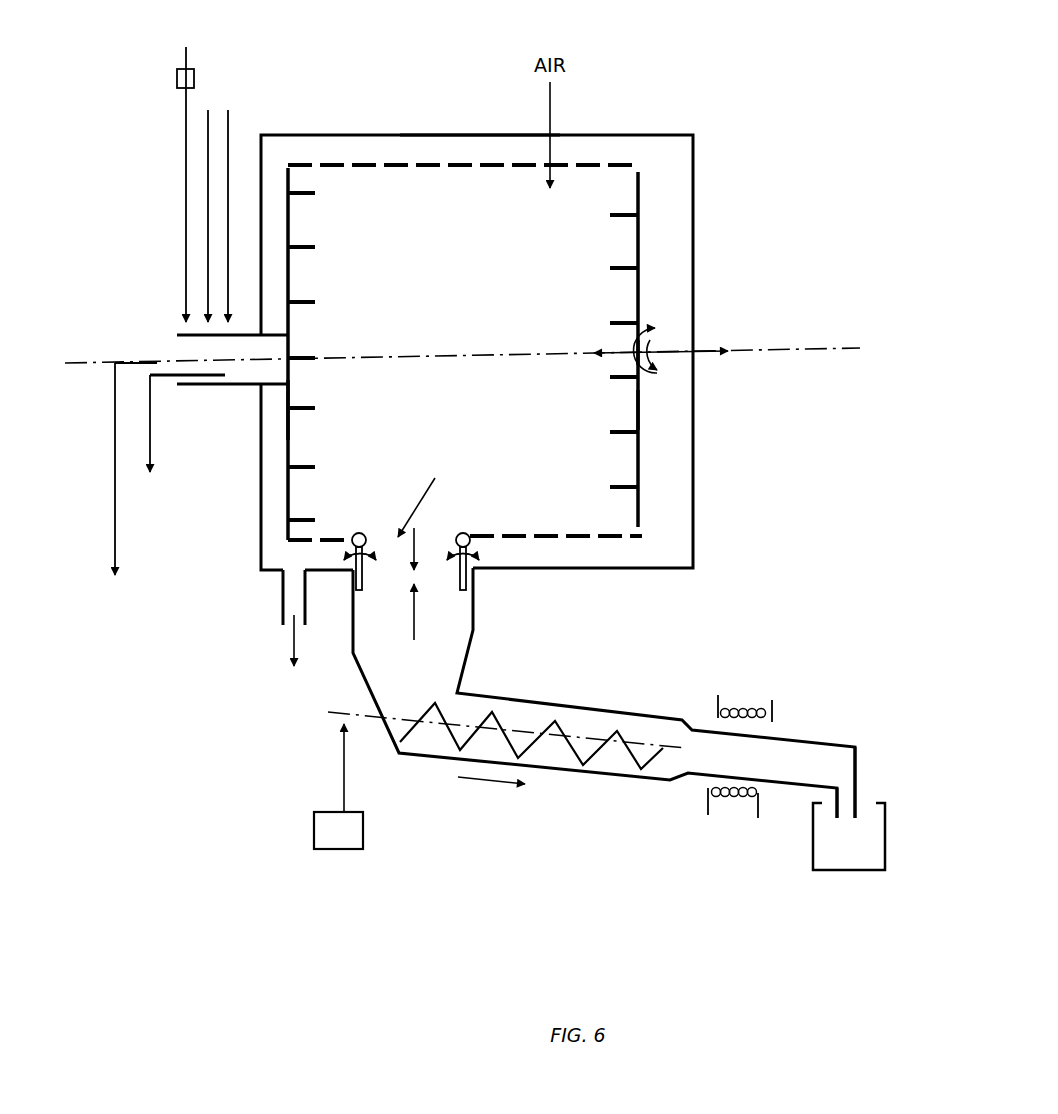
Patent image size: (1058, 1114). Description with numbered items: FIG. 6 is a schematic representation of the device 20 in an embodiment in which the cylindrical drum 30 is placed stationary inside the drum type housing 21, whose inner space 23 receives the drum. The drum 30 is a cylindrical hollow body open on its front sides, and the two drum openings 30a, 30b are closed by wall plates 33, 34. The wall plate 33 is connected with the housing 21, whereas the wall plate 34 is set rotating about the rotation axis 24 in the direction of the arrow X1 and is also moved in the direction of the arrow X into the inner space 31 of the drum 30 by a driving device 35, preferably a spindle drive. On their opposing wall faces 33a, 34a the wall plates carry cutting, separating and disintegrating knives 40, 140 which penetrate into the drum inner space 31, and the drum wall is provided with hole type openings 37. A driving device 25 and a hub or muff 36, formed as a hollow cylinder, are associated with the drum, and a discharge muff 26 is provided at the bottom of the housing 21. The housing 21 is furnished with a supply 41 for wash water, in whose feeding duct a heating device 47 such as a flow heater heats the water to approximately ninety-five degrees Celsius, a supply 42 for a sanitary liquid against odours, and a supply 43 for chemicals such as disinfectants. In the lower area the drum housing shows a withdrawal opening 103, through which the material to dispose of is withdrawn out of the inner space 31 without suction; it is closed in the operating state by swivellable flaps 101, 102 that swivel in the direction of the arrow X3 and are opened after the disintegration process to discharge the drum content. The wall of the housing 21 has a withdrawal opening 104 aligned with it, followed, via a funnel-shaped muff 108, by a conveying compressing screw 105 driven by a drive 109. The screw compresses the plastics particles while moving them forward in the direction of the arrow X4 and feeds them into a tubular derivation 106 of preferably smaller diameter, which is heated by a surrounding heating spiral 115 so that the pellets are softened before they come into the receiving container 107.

The device 20 is at (656, 128).
The drum type housing 21 is at (437, 133).
The inner space of the drum type housing 23 is at (485, 150).
The horizontal rotation axis 24 is at (73, 360).
The driving device 25 is at (131, 481).
The discharge muff 26 is at (292, 638).
The cylindrical drum 30 is at (350, 158).
The drum opening 30a is at (302, 421).
The drum opening 30b is at (633, 411).
The inner space of the drum 31 is at (438, 357).
The wall plate 33 is at (290, 506).
The wall face 33a is at (293, 458).
The wall plate 34 is at (638, 245).
The wall face 34a is at (636, 462).
The driving device 35 is at (668, 357).
The hub or muff 36 is at (226, 388).
The hole type openings 37 is at (506, 535).
The cutting, separating and disintegrating knives 40 is at (303, 297).
The supply for wash water 41 is at (185, 124).
The supply for sanitary liquid 42 is at (208, 117).
The supply for chemicals 43 is at (228, 135).
The heating device 47 is at (193, 76).
The swivellable flap 101 is at (361, 581).
The swivellable flap 102 is at (466, 585).
The withdrawal opening 103 is at (428, 493).
The withdrawal opening of the housing 104 is at (415, 597).
The conveying compressing screw 105 is at (445, 733).
The tubular derivation 106 is at (818, 742).
The receiving container 107 is at (812, 840).
The funnel-shaped muff 108 is at (473, 636).
The drive 109 is at (314, 832).
The heating spiral 115 is at (740, 712).
The cutting, separating and disintegrating knives 140 is at (620, 322).
The arrow X is at (661, 350).
The arrow X1 is at (658, 328).
The arrow X3 is at (377, 570).
The arrow X4 is at (495, 788).